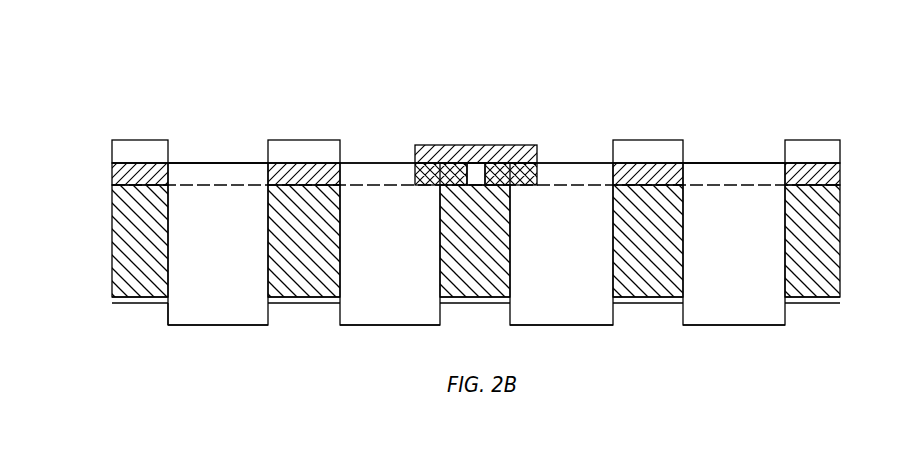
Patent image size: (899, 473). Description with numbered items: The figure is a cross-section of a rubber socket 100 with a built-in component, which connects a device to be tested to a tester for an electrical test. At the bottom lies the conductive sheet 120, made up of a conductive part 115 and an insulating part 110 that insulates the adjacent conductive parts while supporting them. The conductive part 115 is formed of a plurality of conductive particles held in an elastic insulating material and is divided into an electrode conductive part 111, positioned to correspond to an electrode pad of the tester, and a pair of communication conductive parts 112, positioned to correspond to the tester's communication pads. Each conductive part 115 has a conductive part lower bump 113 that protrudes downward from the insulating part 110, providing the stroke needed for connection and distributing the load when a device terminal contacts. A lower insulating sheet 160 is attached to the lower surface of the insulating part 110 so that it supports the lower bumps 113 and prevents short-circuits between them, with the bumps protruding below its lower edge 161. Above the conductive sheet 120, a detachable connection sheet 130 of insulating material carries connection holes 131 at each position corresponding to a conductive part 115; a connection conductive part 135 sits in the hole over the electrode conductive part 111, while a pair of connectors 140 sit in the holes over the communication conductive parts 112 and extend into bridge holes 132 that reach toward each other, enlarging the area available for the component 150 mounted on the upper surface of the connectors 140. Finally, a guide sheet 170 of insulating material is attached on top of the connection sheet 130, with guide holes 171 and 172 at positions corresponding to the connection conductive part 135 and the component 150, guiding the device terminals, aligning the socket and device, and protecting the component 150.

The rubber socket 100 is at (106, 68).
The insulating part 110 is at (642, 273).
The electrode conductive part 111 is at (732, 277).
The communication conductive part 112 is at (400, 280).
The conductive part lower bump 113 is at (775, 315).
The conductive part 115 is at (702, 422).
The conductive sheet 120 is at (429, 312).
The connection sheet 130 is at (436, 140).
The connection hole 131 is at (263, 173).
The bridge hole 132 is at (430, 160).
The connection conductive part 135 is at (728, 165).
The connector 140 is at (492, 136).
The component 150 is at (490, 145).
The lower insulating sheet 160 is at (112, 301).
The edge of bottom layer 161 is at (182, 308).
The guide sheet 170 is at (436, 118).
The guide hole 171 is at (168, 155).
The guide hole 172 is at (340, 145).